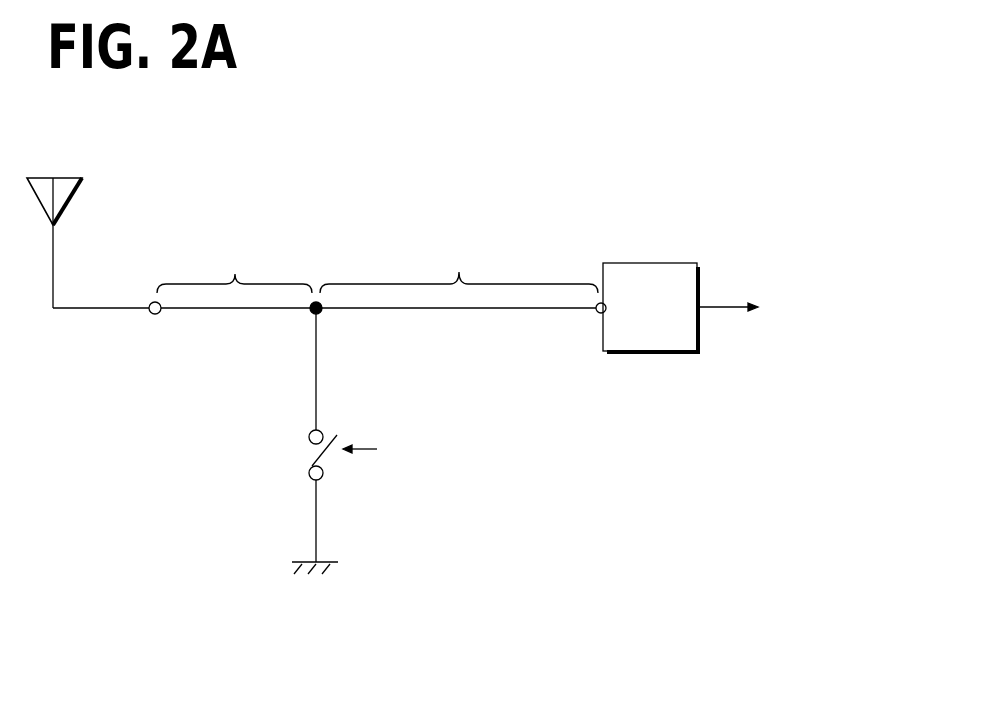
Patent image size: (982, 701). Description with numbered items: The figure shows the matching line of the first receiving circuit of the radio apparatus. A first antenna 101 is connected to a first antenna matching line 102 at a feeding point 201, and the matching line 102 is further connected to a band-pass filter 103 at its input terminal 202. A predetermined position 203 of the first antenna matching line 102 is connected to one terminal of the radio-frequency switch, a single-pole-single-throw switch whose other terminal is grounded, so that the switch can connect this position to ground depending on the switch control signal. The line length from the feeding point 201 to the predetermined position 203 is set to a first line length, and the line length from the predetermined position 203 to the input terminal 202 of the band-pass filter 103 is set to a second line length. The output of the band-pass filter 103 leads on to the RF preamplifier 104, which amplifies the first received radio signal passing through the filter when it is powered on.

The first antenna 101 is at (73, 197).
The first antenna matching line 102 is at (446, 204).
The band-pass filter 103 is at (646, 262).
The RF preamplifier 104 is at (792, 305).
The feeding point 201 is at (160, 313).
The input terminal 202 is at (599, 313).
The predetermined position 203 is at (321, 312).